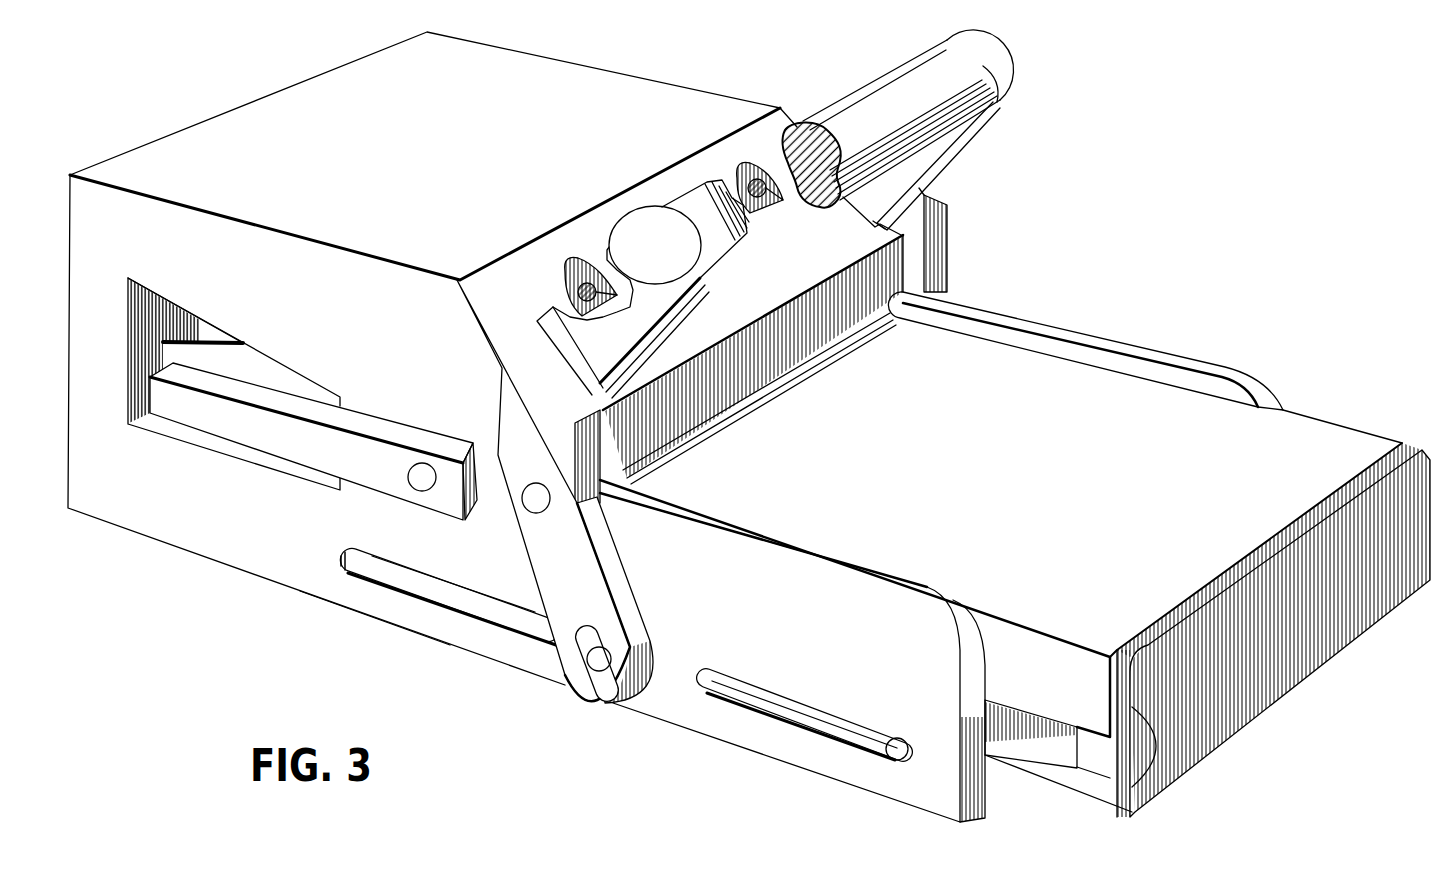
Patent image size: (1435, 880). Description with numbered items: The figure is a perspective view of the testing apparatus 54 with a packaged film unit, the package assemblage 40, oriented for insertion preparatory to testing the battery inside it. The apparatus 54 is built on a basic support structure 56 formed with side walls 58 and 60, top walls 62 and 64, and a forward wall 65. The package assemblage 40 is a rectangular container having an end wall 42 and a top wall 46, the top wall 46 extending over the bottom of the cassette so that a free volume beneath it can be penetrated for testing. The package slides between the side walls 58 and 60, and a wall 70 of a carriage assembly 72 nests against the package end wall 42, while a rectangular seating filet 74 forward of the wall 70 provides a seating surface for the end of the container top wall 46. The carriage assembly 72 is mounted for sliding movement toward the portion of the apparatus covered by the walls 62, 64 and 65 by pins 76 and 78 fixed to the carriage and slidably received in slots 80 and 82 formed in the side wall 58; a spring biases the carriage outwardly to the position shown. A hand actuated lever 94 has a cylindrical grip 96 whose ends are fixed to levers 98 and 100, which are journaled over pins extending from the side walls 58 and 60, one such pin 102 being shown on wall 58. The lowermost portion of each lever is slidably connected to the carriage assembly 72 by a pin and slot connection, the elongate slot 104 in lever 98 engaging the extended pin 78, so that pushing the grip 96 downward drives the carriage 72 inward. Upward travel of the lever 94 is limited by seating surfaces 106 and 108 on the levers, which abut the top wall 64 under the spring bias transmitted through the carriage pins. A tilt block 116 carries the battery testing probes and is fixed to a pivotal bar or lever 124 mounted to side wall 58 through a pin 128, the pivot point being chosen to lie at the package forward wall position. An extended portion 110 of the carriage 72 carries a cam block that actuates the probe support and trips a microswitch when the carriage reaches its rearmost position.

The package assemblage 40 is at (1015, 585).
The end wall 42 is at (1405, 445).
The top wall 46 is at (1322, 437).
The testing apparatus 54 is at (812, 100).
The support structure 56 is at (391, 632).
The side wall 58 is at (678, 700).
The side wall 60 is at (1072, 330).
The top wall 62 is at (595, 92).
The top wall 64 is at (748, 160).
The forward wall 65 is at (920, 260).
The wall 70 is at (1165, 780).
The carriage assembly 72 is at (1043, 770).
The seating filet 74 is at (1097, 753).
The pin 76 is at (893, 760).
The pin 78 is at (597, 666).
The slot 80 is at (768, 707).
The slot 82 is at (487, 607).
The hand actuated lever 94 is at (1013, 66).
The cylindrical grip 96 is at (908, 76).
The lever 98 is at (543, 511).
The lever 100 is at (947, 156).
The pin 102 is at (528, 505).
The slot 104 is at (581, 657).
The seating surface 106 is at (607, 390).
The seating surface 108 is at (876, 228).
The extended portion 110 is at (752, 155).
The tilt block 116 is at (222, 355).
The pivotal bar or lever 124 is at (300, 435).
The pin 128 is at (415, 487).